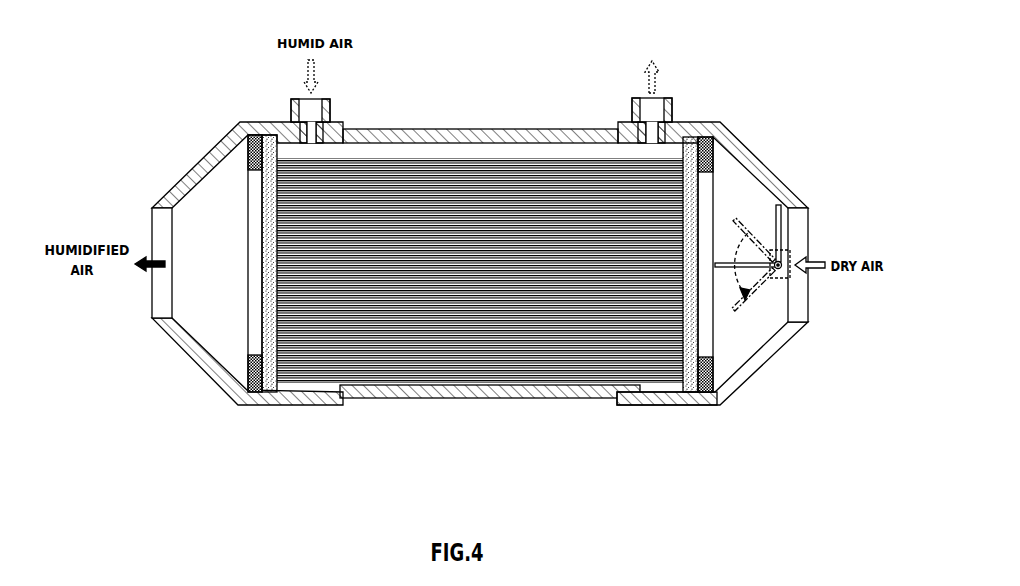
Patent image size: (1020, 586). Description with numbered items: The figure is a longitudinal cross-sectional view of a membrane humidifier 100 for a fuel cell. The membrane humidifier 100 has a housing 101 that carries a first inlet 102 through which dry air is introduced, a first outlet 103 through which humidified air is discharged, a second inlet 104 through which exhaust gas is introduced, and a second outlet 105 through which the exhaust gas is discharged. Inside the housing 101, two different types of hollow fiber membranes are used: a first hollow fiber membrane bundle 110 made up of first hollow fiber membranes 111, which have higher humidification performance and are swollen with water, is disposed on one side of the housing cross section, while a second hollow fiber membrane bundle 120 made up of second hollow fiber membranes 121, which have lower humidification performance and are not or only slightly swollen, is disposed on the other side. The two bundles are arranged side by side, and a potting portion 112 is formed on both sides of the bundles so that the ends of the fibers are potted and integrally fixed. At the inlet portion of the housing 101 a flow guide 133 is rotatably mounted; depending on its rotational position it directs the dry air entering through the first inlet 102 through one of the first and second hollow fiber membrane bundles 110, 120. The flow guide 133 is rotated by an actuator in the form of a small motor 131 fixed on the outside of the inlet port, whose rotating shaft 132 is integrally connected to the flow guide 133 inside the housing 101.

The membrane humidifier 100 is at (490, 323).
The housing 101 is at (240, 268).
The first inlet 102 is at (751, 228).
The first outlet 103 is at (158, 230).
The second inlet 104 is at (317, 106).
The second outlet 105 is at (657, 107).
The first hollow fiber membrane bundle 110 is at (480, 260).
The first hollow fiber membrane 111 is at (470, 173).
The potting portion 112 is at (275, 137).
The second hollow fiber membrane bundle 120 is at (566, 376).
The second hollow fiber membrane 121 is at (520, 358).
The motor 131 is at (775, 290).
The rotating shaft 132 is at (785, 276).
The flow guide 133 is at (778, 205).